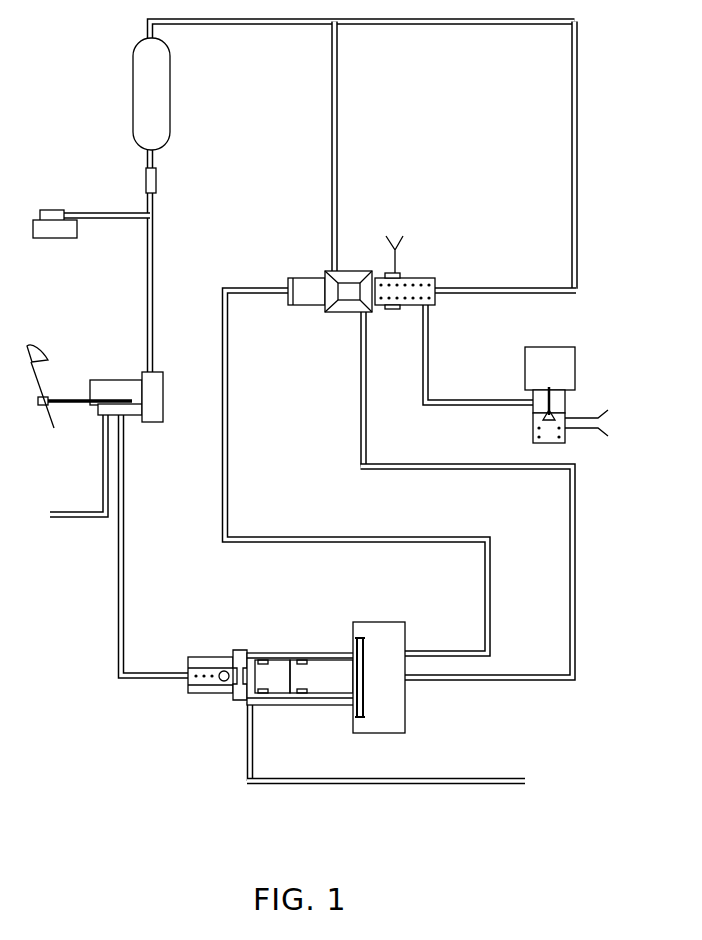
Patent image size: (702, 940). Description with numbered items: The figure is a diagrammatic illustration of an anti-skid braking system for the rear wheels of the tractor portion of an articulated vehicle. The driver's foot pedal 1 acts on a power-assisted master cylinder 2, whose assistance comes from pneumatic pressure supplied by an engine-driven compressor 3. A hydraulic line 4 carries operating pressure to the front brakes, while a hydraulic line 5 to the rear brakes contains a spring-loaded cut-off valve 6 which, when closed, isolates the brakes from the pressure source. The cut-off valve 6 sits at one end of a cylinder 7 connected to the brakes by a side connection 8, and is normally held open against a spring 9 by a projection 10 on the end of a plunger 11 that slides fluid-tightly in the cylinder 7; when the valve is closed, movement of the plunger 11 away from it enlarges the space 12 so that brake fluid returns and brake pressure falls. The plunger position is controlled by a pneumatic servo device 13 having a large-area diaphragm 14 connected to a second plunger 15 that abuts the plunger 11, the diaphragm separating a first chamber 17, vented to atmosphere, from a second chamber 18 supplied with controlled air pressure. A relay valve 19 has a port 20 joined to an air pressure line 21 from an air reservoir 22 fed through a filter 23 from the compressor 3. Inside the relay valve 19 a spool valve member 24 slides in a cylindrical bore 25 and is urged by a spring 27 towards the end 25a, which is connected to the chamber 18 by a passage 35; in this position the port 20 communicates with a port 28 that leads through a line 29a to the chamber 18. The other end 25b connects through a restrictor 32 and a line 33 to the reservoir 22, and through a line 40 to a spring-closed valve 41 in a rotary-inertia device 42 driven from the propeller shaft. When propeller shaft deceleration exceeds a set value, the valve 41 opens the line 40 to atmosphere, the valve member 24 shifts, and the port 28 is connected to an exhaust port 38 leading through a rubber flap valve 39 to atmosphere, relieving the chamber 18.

The foot pedal 1 is at (42, 382).
The master cylinder 2 is at (160, 395).
The compressor 3 is at (72, 232).
The hydraulic line 4 is at (86, 496).
The hydraulic line 5 is at (124, 515).
The cut-off valve 6 is at (224, 683).
The cylinder 7 is at (277, 704).
The side connection 8 is at (369, 784).
The spring 9 is at (205, 657).
The projection 10 is at (240, 655).
The plunger 11 is at (278, 668).
The space 12 is at (246, 701).
The servo device 13 is at (389, 622).
The diaphragm 14 is at (379, 736).
The second plunger 15 is at (333, 672).
The first chamber 17 is at (364, 639).
The second chamber 18 is at (400, 632).
The relay valve 19 is at (303, 277).
The port 20 is at (339, 277).
The air pressure line 21 is at (338, 82).
The air reservoir 22 is at (171, 52).
The filter 23 is at (157, 178).
The spool valve member 24 is at (347, 293).
The cylindrical bore 25 is at (360, 277).
The end of the bore 25a is at (289, 304).
The other end of the bore 25b is at (428, 306).
The spring 27 is at (432, 277).
The port 28 is at (368, 312).
The line 29a is at (367, 442).
The restrictor 32 is at (467, 290).
The line 33 is at (571, 130).
The passage 35 is at (228, 390).
The exhaust port 38 is at (400, 277).
The flap valve 39 is at (398, 251).
The line 40 is at (427, 398).
The spring-closed valve 41 is at (535, 412).
The device 42 is at (590, 348).